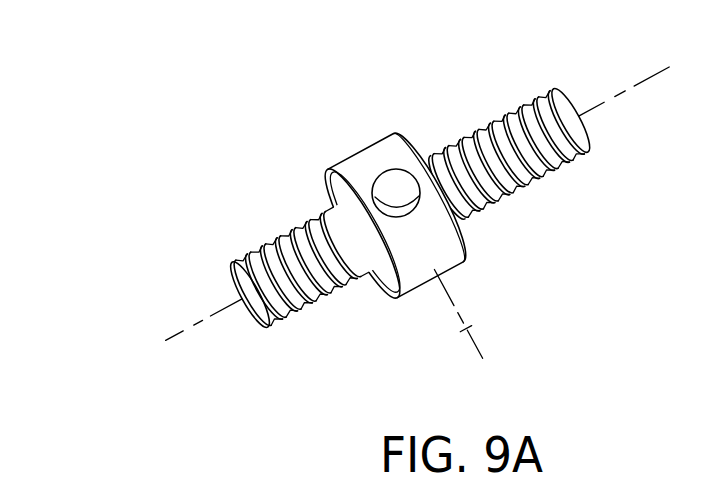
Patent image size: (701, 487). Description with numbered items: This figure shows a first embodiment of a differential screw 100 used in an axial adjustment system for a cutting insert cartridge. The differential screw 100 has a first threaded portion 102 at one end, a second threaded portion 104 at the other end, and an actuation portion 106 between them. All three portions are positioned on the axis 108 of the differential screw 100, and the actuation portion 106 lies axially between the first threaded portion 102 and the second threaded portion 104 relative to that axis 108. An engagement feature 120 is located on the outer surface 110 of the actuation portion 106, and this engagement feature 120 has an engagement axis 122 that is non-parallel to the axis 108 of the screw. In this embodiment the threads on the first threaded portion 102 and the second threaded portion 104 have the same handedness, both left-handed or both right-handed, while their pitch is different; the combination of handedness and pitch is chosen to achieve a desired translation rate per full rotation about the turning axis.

The differential screw 100 is at (163, 193).
The first threaded portion 102 is at (545, 207).
The second threaded portion 104 is at (333, 325).
The actuation portion 106 is at (350, 118).
The axis 108 is at (196, 322).
The outer surface 110 is at (354, 171).
The engagement feature 120 is at (397, 188).
The engagement axis 122 is at (468, 330).